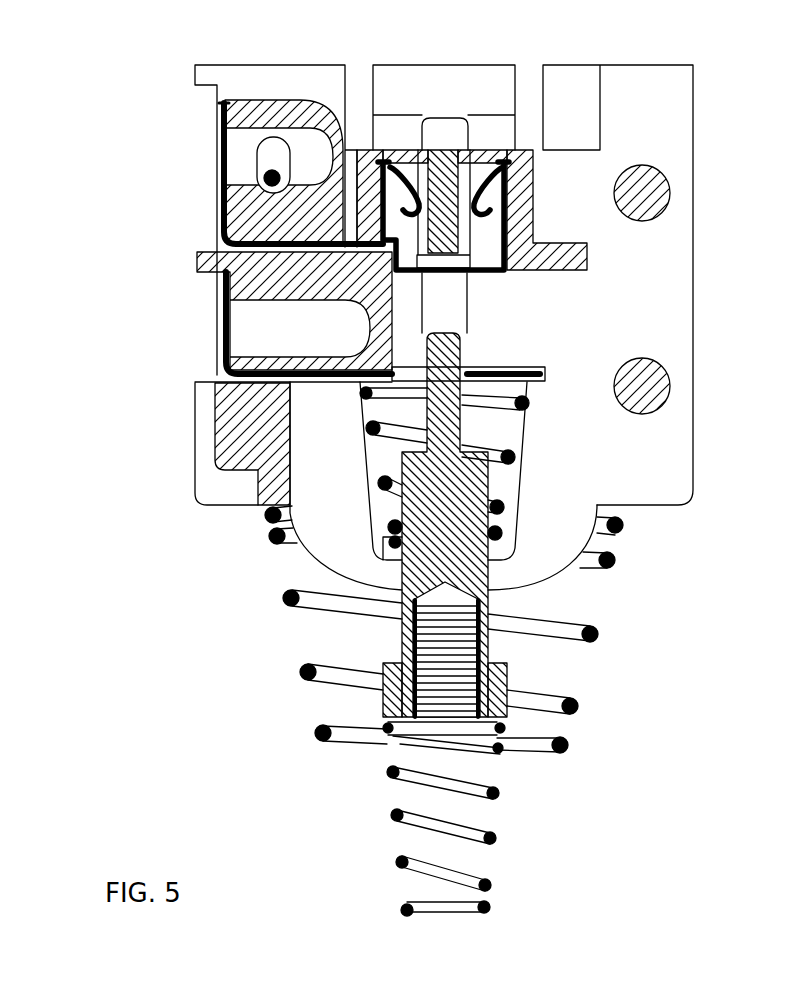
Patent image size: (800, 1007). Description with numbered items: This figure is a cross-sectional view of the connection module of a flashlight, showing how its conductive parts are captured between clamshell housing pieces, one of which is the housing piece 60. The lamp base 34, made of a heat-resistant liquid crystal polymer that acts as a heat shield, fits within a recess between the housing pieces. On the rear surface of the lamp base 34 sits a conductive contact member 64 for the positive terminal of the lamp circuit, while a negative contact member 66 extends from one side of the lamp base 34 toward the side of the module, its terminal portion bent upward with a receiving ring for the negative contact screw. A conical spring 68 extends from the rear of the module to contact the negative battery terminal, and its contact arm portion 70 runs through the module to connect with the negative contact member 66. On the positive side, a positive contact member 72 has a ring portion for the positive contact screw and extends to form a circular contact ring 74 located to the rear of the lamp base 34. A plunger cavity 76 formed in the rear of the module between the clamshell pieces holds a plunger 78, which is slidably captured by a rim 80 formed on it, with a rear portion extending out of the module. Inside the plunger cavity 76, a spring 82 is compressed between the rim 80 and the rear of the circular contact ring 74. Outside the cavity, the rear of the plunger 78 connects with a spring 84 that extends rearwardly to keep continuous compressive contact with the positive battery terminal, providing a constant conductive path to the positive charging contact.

The lamp base 34 is at (562, 258).
The clamshell housing piece 60 is at (694, 282).
The conductive contact member 64 is at (510, 185).
The negative contact member 66 is at (222, 213).
The conical spring 68 is at (598, 634).
The contact arm portion 70 is at (264, 172).
The positive contact member 72 is at (218, 288).
The circular contact ring 74 is at (524, 368).
The plunger cavity 76 is at (502, 436).
The plunger 78 is at (487, 479).
The rim 80 is at (508, 543).
The spring 82 is at (512, 456).
The spring 84 is at (497, 792).